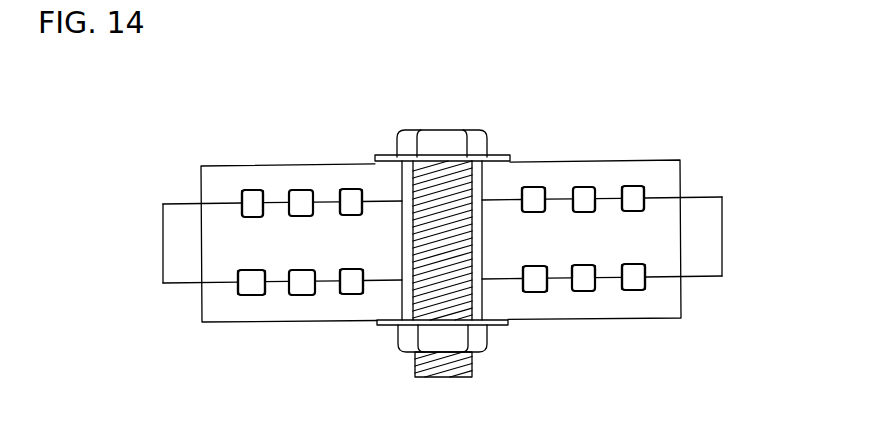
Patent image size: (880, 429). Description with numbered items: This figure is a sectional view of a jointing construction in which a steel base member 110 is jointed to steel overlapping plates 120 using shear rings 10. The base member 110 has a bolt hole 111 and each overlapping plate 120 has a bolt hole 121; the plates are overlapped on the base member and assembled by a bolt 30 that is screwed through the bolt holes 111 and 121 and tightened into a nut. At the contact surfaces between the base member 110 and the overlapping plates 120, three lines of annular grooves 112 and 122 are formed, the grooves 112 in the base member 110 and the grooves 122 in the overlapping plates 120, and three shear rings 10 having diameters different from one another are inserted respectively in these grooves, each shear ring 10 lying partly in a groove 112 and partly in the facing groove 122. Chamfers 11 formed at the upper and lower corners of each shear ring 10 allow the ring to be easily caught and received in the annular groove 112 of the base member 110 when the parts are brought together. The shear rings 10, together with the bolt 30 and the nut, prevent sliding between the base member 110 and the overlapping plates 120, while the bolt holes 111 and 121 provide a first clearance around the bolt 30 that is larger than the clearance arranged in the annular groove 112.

The shear ring 10 is at (250, 196).
The chamfer 11 is at (303, 195).
The bolt 30 is at (432, 146).
The base member 110 is at (695, 238).
The bolt hole 111 is at (482, 255).
The annular groove 112 is at (262, 216).
The overlapping plate 120 is at (218, 185).
The bolt hole 121 is at (478, 188).
The annular groove 122 is at (240, 194).